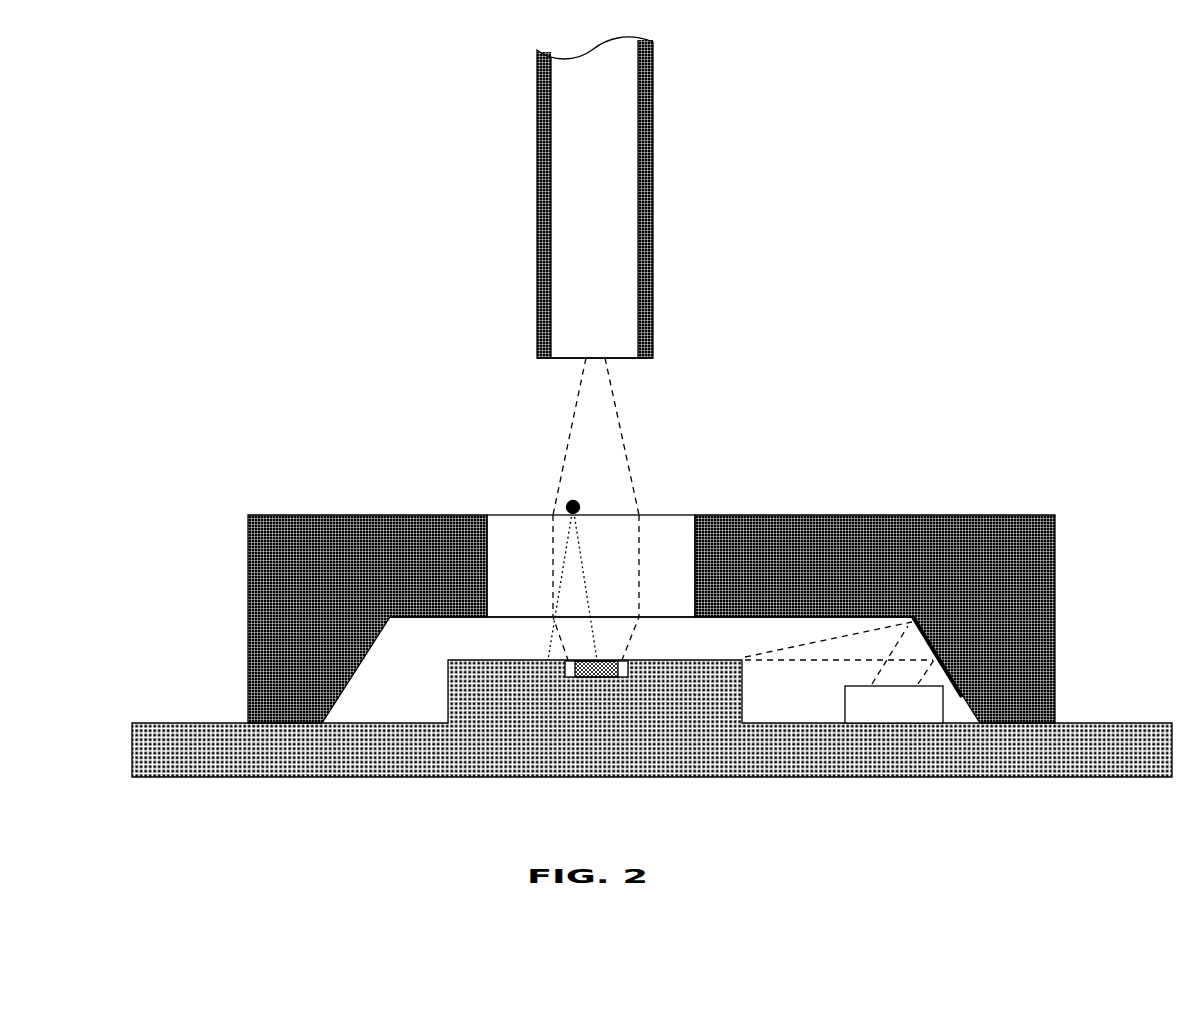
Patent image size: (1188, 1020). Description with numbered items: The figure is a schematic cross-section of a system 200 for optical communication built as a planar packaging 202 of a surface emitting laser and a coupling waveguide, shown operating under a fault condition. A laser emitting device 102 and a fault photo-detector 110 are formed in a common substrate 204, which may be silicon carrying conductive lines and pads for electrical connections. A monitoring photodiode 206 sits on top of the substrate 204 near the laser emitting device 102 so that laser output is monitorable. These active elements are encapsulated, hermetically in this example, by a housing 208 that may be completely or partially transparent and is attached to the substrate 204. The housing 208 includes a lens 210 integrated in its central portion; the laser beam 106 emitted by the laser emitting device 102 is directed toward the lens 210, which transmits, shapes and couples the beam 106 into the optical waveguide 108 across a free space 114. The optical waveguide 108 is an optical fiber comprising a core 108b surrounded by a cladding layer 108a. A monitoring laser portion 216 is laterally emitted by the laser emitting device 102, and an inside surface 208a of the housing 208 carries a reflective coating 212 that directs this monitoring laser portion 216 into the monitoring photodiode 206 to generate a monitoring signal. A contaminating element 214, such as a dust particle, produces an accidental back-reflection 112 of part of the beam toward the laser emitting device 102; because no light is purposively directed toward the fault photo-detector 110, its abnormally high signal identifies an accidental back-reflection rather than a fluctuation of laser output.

The system for optical communication 200 is at (286, 196).
The optical waveguide 108 is at (603, 197).
The cladding layer 108a is at (650, 262).
The core 108b is at (570, 200).
The free space 114 is at (628, 436).
The laser beam 106 is at (566, 462).
The planar packaging 202 is at (188, 578).
The substrate 204 is at (198, 778).
The housing 208 is at (297, 526).
The lens 210 is at (680, 520).
The accidental back-reflection 112 is at (586, 583).
The inside surface 208a is at (770, 617).
The reflective coating 212 is at (915, 617).
The monitoring laser portion 216 is at (817, 660).
The monitoring photodiode 206 is at (894, 704).
The contaminating element 214 is at (581, 504).
The fault photo-detector 110 is at (566, 676).
The laser emitting device 102 is at (586, 678).